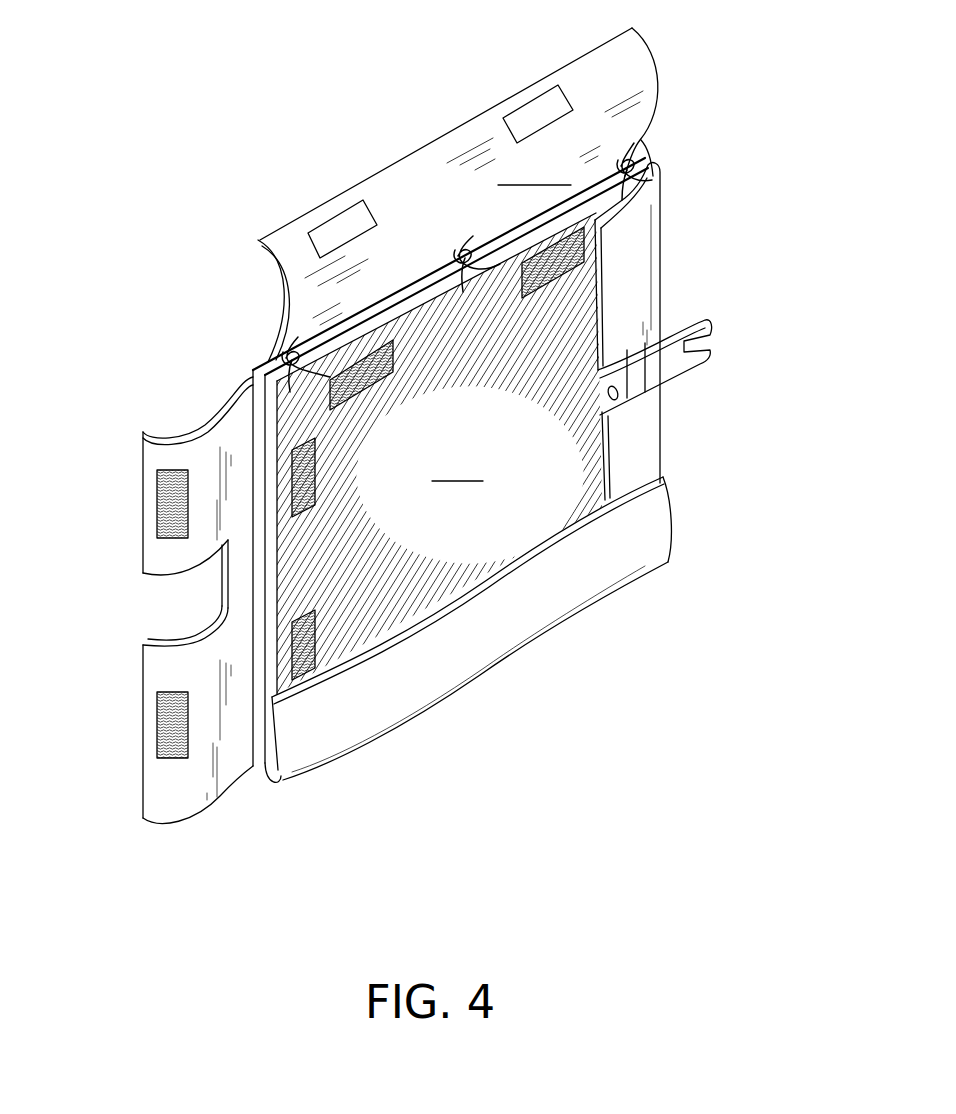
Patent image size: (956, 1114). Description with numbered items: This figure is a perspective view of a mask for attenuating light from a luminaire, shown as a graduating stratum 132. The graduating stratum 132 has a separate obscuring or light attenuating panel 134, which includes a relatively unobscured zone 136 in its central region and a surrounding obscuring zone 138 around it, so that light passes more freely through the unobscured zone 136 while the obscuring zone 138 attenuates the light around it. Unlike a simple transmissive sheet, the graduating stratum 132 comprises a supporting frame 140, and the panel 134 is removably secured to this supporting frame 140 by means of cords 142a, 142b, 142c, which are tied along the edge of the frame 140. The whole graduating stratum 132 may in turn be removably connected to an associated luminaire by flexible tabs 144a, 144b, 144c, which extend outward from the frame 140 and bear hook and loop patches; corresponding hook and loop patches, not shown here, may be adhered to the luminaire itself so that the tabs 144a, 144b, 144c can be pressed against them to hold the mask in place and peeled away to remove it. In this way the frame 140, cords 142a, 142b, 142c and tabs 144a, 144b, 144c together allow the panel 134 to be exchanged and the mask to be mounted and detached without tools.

The graduating stratum 132 is at (471, 492).
The light attenuating panel 134 is at (413, 292).
The relatively unobscured zone 136 is at (471, 455).
The surrounding obscuring zone 138 is at (557, 337).
The supporting frame 140 is at (258, 648).
The cord 142a is at (283, 353).
The cord 142b is at (455, 260).
The cord 142c is at (630, 172).
The flexible tab 144a is at (164, 664).
The flexible tab 144b is at (157, 450).
The flexible tab 144c is at (458, 195).